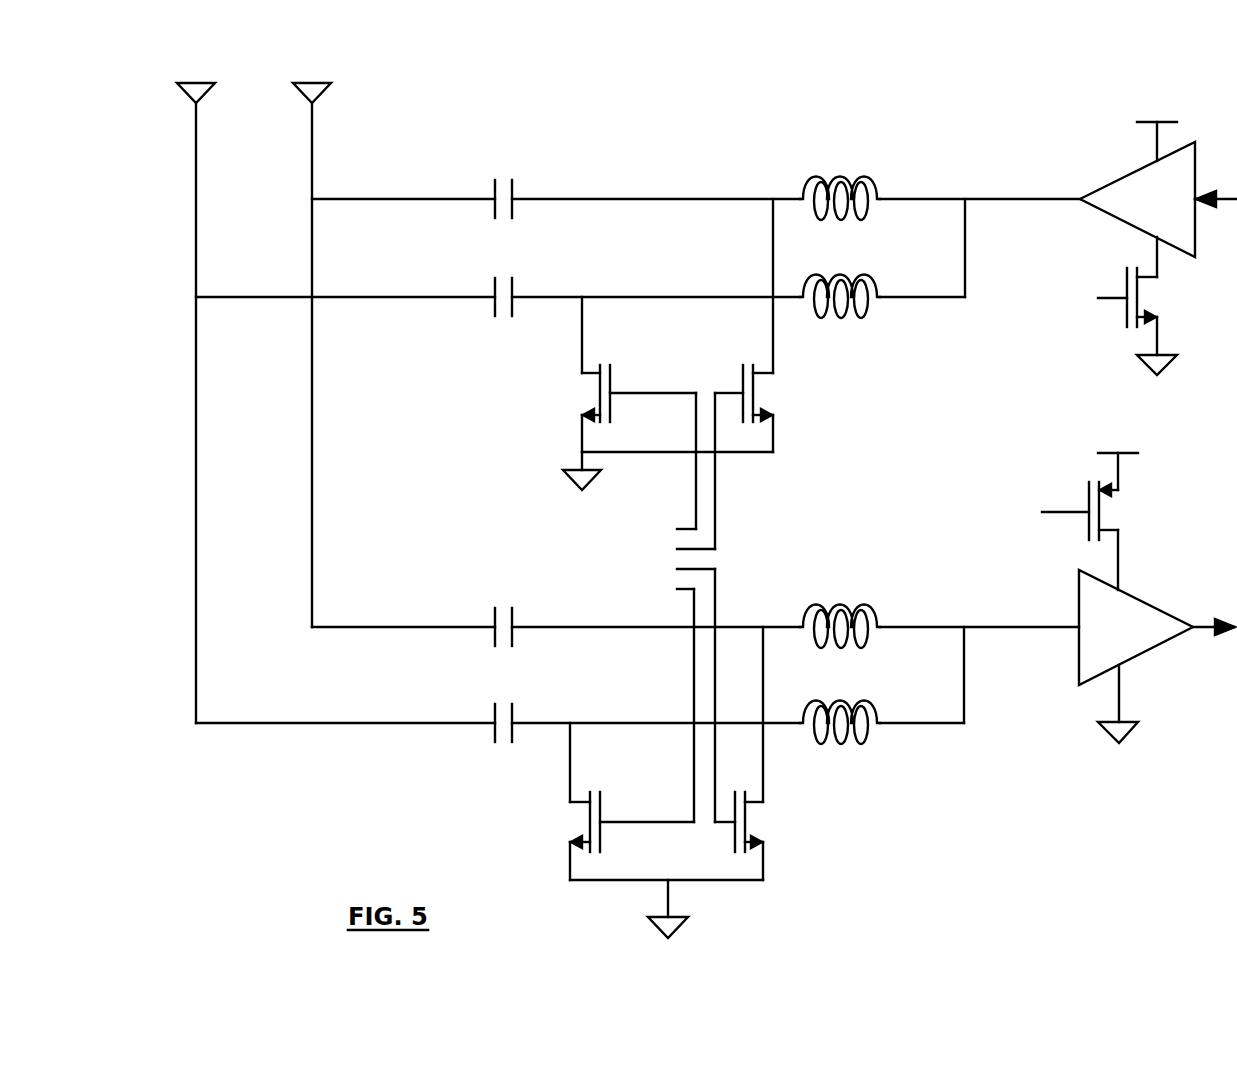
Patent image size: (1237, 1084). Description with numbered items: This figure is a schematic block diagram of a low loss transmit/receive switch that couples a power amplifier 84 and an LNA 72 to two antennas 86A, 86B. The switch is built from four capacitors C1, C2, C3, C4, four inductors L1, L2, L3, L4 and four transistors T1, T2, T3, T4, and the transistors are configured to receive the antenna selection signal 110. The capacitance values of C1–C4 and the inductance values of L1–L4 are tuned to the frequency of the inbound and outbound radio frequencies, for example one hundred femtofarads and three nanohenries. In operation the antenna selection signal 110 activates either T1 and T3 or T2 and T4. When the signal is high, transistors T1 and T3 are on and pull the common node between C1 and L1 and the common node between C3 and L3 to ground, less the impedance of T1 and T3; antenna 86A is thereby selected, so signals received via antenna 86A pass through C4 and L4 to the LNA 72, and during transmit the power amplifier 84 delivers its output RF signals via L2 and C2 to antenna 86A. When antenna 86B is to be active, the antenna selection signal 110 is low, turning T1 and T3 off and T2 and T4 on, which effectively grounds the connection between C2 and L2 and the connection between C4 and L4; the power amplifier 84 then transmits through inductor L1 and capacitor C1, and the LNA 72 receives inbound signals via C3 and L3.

The antenna 86A is at (195, 387).
The antenna 86B is at (311, 339).
The power amplifier 84 is at (1131, 248).
The LNA 72 is at (1101, 598).
The antenna selection signal 110 is at (581, 607).
The capacitor C1 is at (502, 182).
The capacitor C2 is at (502, 280).
The capacitor C3 is at (502, 610).
The capacitor C4 is at (502, 707).
The inductor L1 is at (840, 184).
The inductor L2 is at (840, 281).
The inductor L3 is at (840, 611).
The inductor L4 is at (840, 708).
The transistor T1 is at (766, 325).
The transistor T2 is at (616, 374).
The transistor T3 is at (765, 753).
The transistor T4 is at (609, 801).